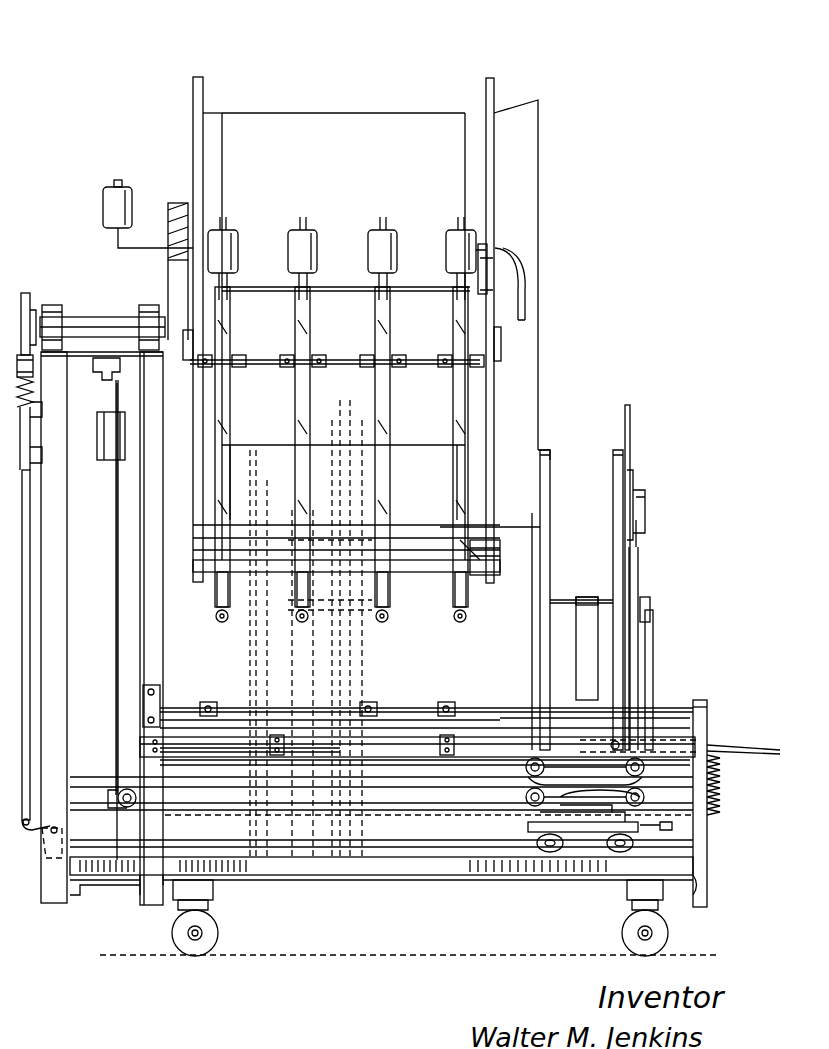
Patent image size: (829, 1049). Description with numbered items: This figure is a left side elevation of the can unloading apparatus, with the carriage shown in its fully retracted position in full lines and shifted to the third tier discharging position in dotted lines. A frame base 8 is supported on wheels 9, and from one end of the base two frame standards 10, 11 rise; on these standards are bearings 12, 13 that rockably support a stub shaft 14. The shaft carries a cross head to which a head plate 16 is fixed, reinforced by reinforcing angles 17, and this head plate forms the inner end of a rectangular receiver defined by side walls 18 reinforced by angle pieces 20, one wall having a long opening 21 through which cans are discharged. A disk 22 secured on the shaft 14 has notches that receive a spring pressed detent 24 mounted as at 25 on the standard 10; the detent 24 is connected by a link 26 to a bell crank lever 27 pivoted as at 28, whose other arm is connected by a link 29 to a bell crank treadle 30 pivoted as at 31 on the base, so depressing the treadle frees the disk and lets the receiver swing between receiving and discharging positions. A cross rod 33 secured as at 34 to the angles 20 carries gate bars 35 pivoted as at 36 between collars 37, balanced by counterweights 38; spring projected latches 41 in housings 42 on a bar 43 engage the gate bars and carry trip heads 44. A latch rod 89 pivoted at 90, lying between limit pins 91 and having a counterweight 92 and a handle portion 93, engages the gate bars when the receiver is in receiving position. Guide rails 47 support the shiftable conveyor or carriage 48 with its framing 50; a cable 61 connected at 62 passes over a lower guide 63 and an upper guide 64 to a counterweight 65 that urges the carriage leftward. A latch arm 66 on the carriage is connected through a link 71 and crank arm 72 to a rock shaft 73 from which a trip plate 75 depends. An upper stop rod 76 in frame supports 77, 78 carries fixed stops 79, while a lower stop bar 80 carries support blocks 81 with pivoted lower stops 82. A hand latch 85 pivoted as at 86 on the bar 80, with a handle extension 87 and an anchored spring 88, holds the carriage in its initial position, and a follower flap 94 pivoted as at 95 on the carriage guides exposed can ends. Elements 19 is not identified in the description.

The frame base 8 is at (560, 876).
The wheels 9 is at (172, 936).
The frame standard 10 is at (60, 642).
The frame standard 11 is at (160, 656).
The bearing 12 is at (52, 305).
The bearing 13 is at (150, 305).
The stub shaft 14 is at (108, 324).
The head plate 16 is at (192, 118).
The reinforcing angles 17 is at (176, 202).
The side walls 18 is at (322, 112).
The side panel 19 is at (535, 125).
The angle pieces 20 is at (204, 88).
The opening 21 is at (428, 445).
The disk 22 is at (27, 293).
The spring pressed detent 24 is at (33, 368).
The detent mounting 25 is at (30, 468).
The link 26 is at (30, 558).
The bell crank lever 27 is at (36, 822).
The pivot 28 is at (64, 832).
The link 29 is at (275, 876).
The bell crank treadle 30 is at (690, 842).
The pivot 31 is at (705, 875).
The cross rod 33 is at (430, 360).
The securing means 34 is at (193, 340).
The gate bars 35 is at (225, 408).
The pivot 36 is at (296, 358).
The collars 37 is at (352, 368).
The counterweights 38 is at (318, 250).
The latches 41 is at (445, 585).
The housing 42 is at (216, 598).
The bar 43 is at (480, 578).
The trip heads 44 is at (215, 618).
The guide rails 47 is at (460, 812).
The shiftable conveyor or carriage 48 is at (348, 440).
The framing 50 is at (614, 532).
The cable 61 is at (115, 585).
The cable connection 62 is at (530, 822).
The lower guide 63 is at (122, 788).
The upper guide 64 is at (93, 358).
The counterweight 65 is at (100, 458).
The latch arm 66 is at (540, 736).
The link 71 is at (653, 632).
The crank arm 72 is at (650, 600).
The rock shaft 73 is at (567, 598).
The latch arm trip plate 75 is at (600, 610).
The upper stop rod 76 is at (400, 718).
The frame support 77 is at (707, 730).
The frame support 78 is at (160, 700).
The fixed stops 79 is at (208, 700).
The lower stop bar 80 is at (475, 718).
The support blocks 81 is at (470, 760).
The lower stop 82 is at (215, 732).
The hand latch 85 is at (585, 782).
The pivot 86 is at (620, 742).
The handle extension 87 is at (780, 750).
The anchored spring 88 is at (722, 776).
The latch rod 89 is at (428, 286).
The pivot 90 is at (238, 250).
The limit pins 91 is at (488, 290).
The counterweight 92 is at (103, 208).
The handle portion 93 is at (527, 308).
The follower flap or guide 94 is at (631, 430).
The pivot 95 is at (634, 480).